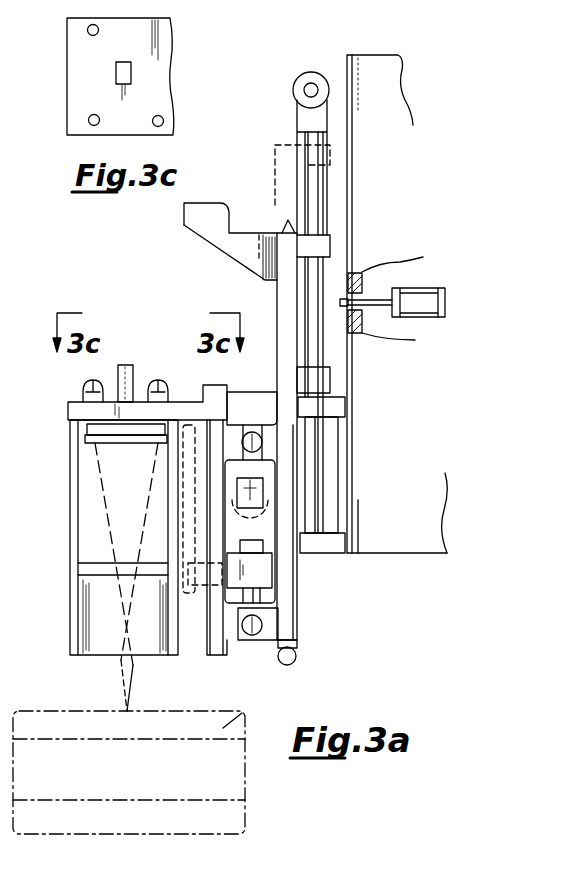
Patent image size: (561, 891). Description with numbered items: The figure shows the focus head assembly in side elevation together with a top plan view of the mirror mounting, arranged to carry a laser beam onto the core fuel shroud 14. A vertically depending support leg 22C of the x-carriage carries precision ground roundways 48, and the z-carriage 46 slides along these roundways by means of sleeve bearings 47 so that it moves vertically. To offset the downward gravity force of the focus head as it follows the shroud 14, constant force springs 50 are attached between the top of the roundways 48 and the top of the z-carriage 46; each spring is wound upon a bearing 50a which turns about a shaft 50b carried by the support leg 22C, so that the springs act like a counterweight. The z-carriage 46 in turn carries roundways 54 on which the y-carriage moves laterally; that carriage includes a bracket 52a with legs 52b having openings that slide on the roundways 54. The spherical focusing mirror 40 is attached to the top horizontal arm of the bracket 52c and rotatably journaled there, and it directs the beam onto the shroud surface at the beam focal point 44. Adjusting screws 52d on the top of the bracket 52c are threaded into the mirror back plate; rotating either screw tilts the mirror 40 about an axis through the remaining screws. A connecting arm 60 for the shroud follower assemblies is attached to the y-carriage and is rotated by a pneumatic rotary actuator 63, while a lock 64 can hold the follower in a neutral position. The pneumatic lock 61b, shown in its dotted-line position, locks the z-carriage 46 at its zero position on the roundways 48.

In FIG. 3A, the core fuel shroud 14 is at (245, 713).
In FIG. 3A, the support leg 22C is at (423, 508).
In FIG. 3A, the spherical focusing mirror 40 is at (126, 453).
In FIG. 3A, the beam focal point 44 is at (124, 710).
In FIG. 3A, the z-carriage 46 is at (299, 610).
In FIG. 3A, the sleeve bearings 47 is at (331, 247).
In FIG. 3A, the roundways 48 is at (322, 346).
In FIG. 3A, the constant force springs 50 is at (297, 120).
In FIG. 3A, the bearing 50a is at (316, 72).
In FIG. 3A, the shaft 50b is at (318, 91).
In FIG. 3A, the bracket 52a is at (208, 640).
In FIG. 3A, the legs 52b is at (230, 425).
In FIG. 3A, the bracket 52c is at (70, 557).
In FIG. 3C, the adjusting screws 52d is at (156, 125).
In FIG. 3A, the adjusting screws 52d is at (85, 391).
In FIG. 3A, the roundways 54 is at (262, 440).
In FIG. 3A, the connecting arm 60 is at (188, 425).
In FIG. 3A, the pneumatic lock 61b is at (433, 300).
In FIG. 3A, the pneumatic rotary actuator 63 is at (258, 486).
In FIG. 3A, the lock 64 is at (272, 572).